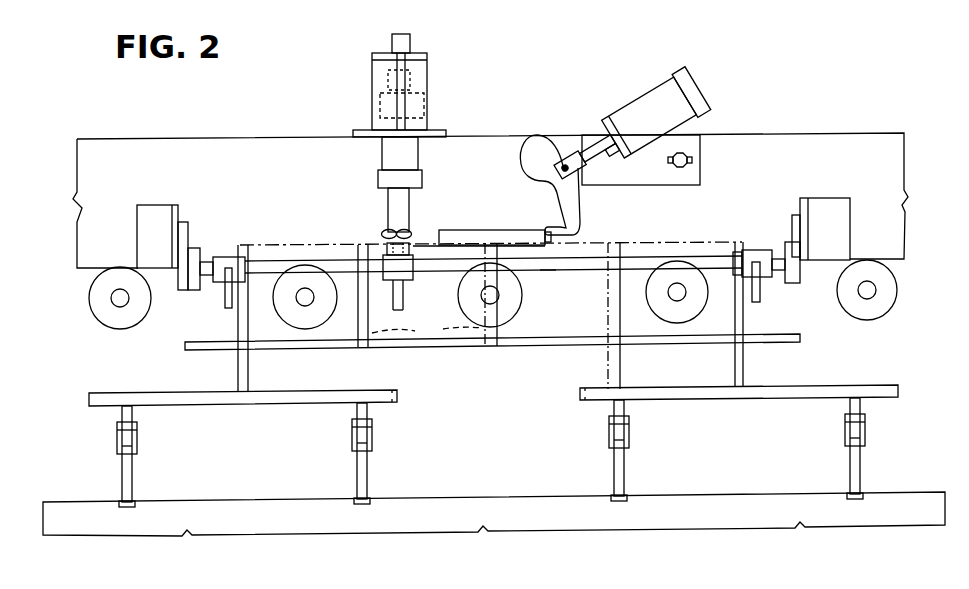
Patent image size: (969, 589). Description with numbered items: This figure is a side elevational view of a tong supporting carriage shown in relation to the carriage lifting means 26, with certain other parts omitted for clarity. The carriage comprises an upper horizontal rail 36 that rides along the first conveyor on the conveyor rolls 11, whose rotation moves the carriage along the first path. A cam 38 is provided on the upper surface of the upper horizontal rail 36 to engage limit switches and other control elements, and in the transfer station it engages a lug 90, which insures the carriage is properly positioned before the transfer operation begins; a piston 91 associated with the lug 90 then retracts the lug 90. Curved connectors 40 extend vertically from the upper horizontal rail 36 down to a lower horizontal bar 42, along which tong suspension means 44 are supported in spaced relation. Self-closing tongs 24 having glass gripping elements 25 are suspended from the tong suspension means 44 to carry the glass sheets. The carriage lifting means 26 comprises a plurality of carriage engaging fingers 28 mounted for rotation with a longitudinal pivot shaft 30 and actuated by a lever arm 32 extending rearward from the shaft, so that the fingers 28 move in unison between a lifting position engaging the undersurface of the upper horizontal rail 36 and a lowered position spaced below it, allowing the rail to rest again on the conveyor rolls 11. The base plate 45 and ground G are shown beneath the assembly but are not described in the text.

The conveyor roll 11 is at (91, 314).
The self-closing tong 24 is at (320, 456).
The glass gripping element 25 is at (138, 506).
The carriage lifting means 26 is at (227, 309).
The carriage engaging finger 28 is at (378, 250).
The longitudinal pivot shaft 30 is at (546, 271).
The lever arm 32 is at (416, 282).
The upper horizontal rail 36 is at (682, 242).
The cam 38 is at (466, 228).
The curved connector 40 is at (427, 325).
The lower horizontal bar 42 is at (802, 338).
The tong suspension means 44 is at (232, 373).
The base plate 45 is at (580, 394).
The lug 90 is at (544, 192).
The piston 91 is at (652, 100).
The ground G is at (492, 503).